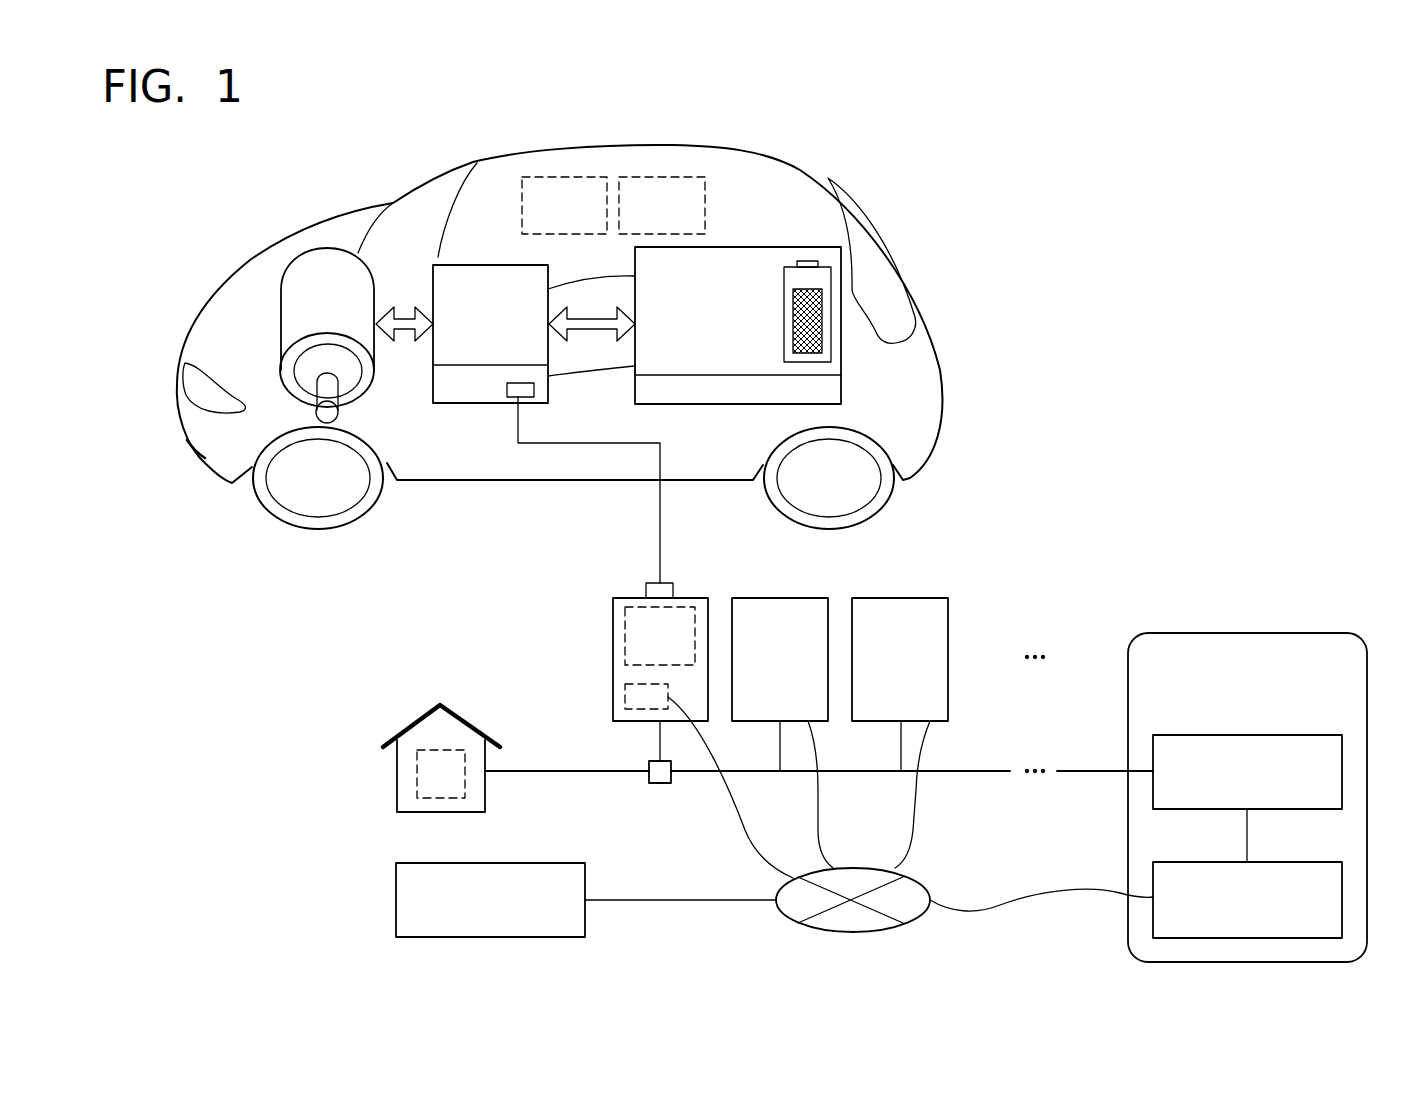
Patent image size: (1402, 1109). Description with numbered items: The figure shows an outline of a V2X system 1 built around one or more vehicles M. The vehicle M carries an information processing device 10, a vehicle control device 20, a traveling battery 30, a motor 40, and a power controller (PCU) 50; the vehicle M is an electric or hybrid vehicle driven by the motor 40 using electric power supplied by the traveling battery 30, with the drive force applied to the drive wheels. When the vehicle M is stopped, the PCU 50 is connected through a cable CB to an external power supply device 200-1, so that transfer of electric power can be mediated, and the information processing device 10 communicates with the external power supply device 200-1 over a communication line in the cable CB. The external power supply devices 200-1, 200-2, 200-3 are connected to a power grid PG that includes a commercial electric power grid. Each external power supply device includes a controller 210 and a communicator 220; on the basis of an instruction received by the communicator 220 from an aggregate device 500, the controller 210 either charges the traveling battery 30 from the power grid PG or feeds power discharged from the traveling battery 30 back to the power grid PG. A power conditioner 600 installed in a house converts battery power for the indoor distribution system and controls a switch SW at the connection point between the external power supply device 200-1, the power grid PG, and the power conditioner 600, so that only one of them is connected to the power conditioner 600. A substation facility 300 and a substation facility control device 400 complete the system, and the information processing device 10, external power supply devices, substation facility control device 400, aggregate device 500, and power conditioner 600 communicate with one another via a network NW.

The V2X system 1 is at (1213, 292).
The vehicle M is at (912, 272).
The information processing device 10 is at (557, 177).
The vehicle control device 20 is at (652, 177).
The traveling battery 30 is at (766, 247).
The motor 40 is at (326, 248).
The power controller (PCU) 50 is at (490, 265).
The cable CB is at (660, 531).
The external power supply device 200-1 is at (687, 598).
The external power supply device 200-2 is at (807, 598).
The external power supply device 200-3 is at (927, 598).
The controller 210 is at (625, 633).
The communicator 220 is at (625, 690).
The switch SW is at (660, 783).
The power grid PG is at (1098, 771).
The network NW is at (851, 932).
The aggregate device 500 is at (518, 863).
The power conditioner 600 is at (417, 778).
The substation facility 300 is at (1277, 735).
The substation facility control device 400 is at (1277, 862).